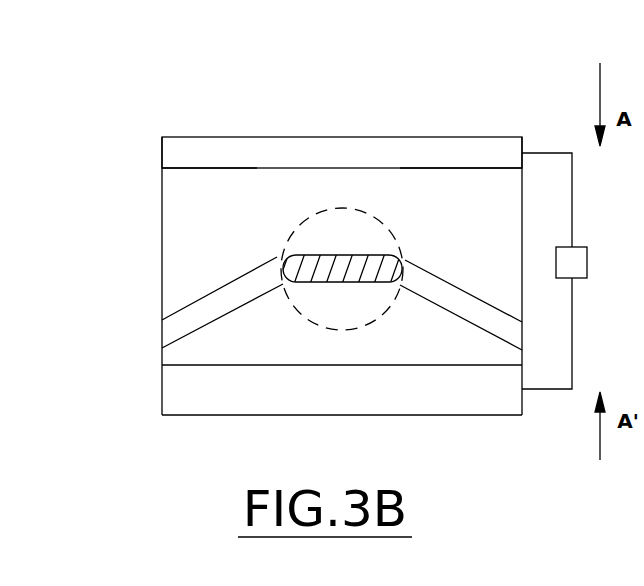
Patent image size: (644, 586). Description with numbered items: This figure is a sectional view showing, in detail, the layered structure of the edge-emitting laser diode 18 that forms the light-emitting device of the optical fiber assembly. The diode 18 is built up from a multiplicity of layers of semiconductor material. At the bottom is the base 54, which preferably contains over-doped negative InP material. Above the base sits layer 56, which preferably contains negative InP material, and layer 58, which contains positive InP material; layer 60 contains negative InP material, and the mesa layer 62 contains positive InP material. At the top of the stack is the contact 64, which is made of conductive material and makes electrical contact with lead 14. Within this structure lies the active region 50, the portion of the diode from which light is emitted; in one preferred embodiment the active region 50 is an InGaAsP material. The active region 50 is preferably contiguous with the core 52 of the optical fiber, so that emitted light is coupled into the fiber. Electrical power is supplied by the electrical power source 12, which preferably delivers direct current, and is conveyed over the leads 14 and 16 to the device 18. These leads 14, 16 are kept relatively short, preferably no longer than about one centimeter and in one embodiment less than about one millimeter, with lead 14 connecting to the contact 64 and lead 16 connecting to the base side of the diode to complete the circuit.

The electrical power source 12 is at (587, 262).
The lead 14 is at (572, 212).
The lead 16 is at (572, 345).
The edge-emitting laser diode 18 is at (386, 135).
The active region 50 is at (284, 266).
The core 52 is at (295, 218).
The base 54 is at (175, 383).
The layer 56 is at (187, 357).
The layer 58 is at (178, 328).
The layer 60 is at (187, 206).
The mesa layer 62 is at (400, 198).
The contact 64 is at (193, 150).